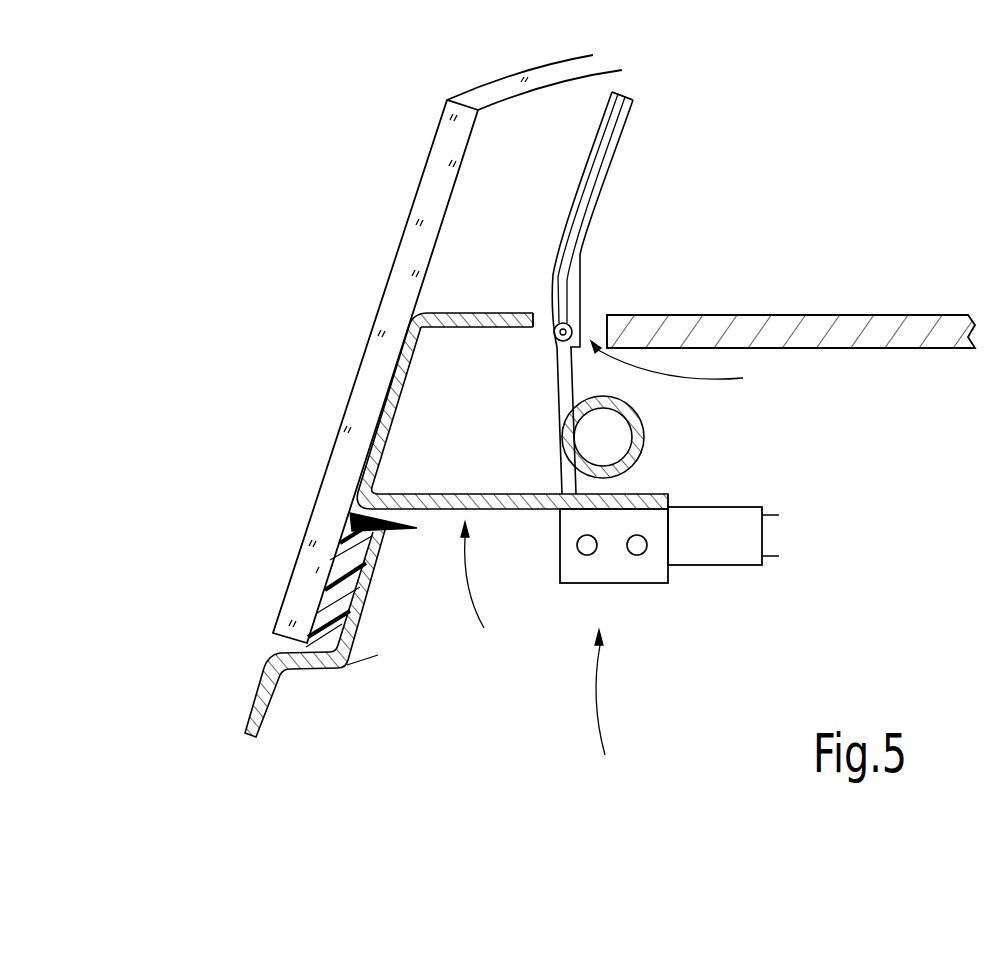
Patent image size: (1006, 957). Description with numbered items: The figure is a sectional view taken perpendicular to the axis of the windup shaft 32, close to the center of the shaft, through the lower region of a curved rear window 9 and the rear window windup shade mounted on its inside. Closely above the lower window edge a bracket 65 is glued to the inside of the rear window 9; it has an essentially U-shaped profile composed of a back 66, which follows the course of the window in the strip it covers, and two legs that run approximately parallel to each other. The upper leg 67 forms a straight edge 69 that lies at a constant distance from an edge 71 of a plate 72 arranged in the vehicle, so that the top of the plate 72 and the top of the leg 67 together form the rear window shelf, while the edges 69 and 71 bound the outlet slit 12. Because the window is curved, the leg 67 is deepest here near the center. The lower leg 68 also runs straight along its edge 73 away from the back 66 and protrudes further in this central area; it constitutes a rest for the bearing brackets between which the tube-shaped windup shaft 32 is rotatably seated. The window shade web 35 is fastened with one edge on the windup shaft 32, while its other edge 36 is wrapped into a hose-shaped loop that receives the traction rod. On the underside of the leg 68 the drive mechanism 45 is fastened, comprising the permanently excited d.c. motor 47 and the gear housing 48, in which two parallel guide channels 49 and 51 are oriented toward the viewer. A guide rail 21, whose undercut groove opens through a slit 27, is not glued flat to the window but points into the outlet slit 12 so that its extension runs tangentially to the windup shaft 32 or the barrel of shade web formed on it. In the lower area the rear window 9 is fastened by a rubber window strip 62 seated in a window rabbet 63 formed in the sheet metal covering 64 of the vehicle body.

The rear window 9 is at (323, 522).
The outlet slit 12 is at (679, 365).
The guide rail 21 is at (612, 170).
The slit 27 is at (627, 98).
The windup shaft 32 is at (640, 430).
The window shade web 35 is at (557, 397).
The edge of the window shade web 36 is at (578, 315).
The drive mechanism 45 is at (610, 706).
The d.c. motor 47 is at (740, 567).
The gear housing 48 is at (655, 587).
The guide channel 49 is at (584, 557).
The guide channel 51 is at (636, 557).
The rubber window strip 62 is at (363, 618).
The window rabbet 63 is at (270, 653).
The sheet metal covering 64 is at (263, 732).
The bracket 65 is at (481, 589).
The back 66 is at (393, 418).
The leg 67 is at (480, 313).
The lower leg 68 is at (498, 494).
The straight edge 69 is at (536, 333).
The edge of the plate 71 is at (603, 325).
The plate 72 is at (790, 316).
The edge 73 is at (672, 500).